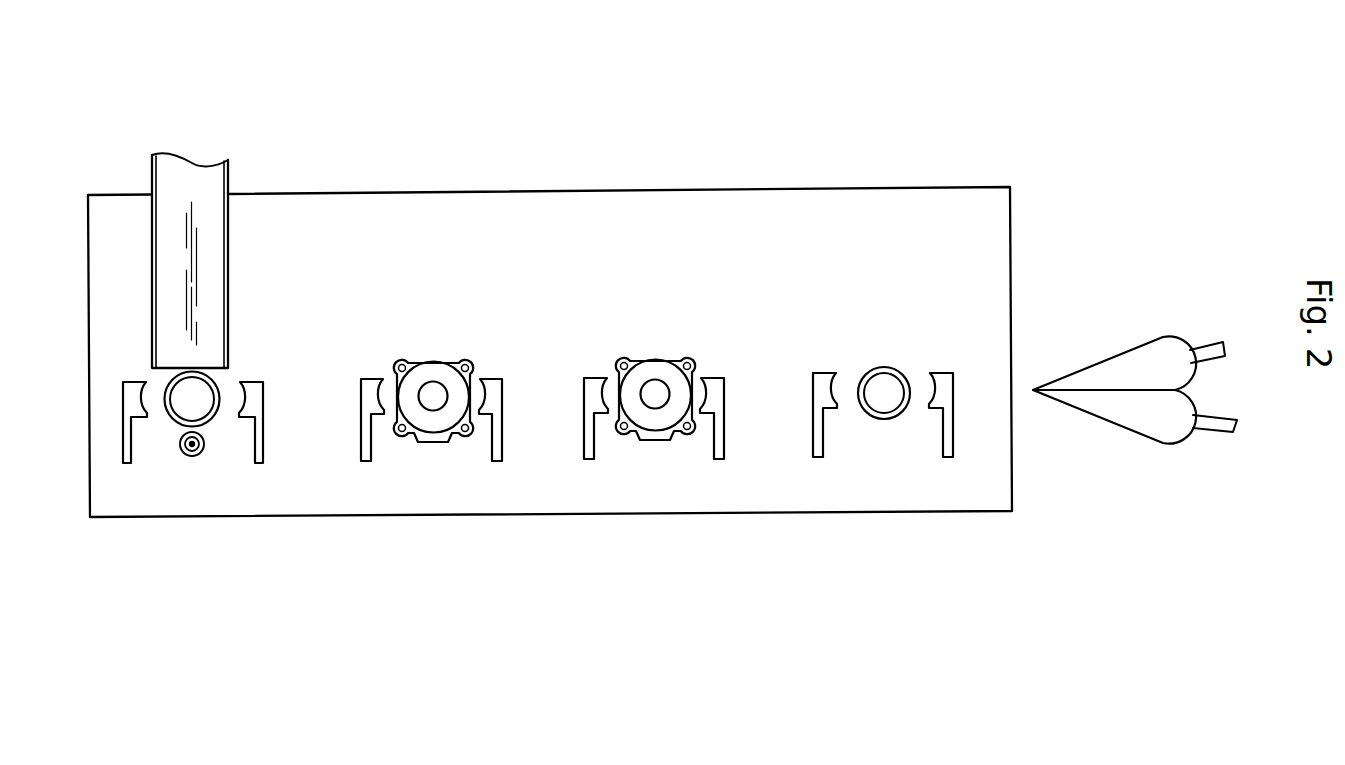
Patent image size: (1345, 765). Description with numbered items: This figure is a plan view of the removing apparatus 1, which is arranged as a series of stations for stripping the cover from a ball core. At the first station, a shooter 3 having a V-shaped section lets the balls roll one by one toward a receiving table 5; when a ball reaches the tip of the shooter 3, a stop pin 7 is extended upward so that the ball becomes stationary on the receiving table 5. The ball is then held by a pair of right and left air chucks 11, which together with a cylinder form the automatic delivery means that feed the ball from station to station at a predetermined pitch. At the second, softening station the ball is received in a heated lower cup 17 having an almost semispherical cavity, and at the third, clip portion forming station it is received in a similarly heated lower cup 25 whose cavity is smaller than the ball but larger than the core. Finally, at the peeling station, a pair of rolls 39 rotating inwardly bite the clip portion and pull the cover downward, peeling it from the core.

The removing apparatus 1 is at (1007, 66).
The shooter 3 is at (215, 215).
The receiving table 5 is at (186, 405).
The stop pin 7 is at (195, 450).
The air chucks 11 is at (260, 447).
The lower cup 17 is at (432, 425).
The lower cup 25 is at (655, 418).
The rolls 39 is at (1120, 363).